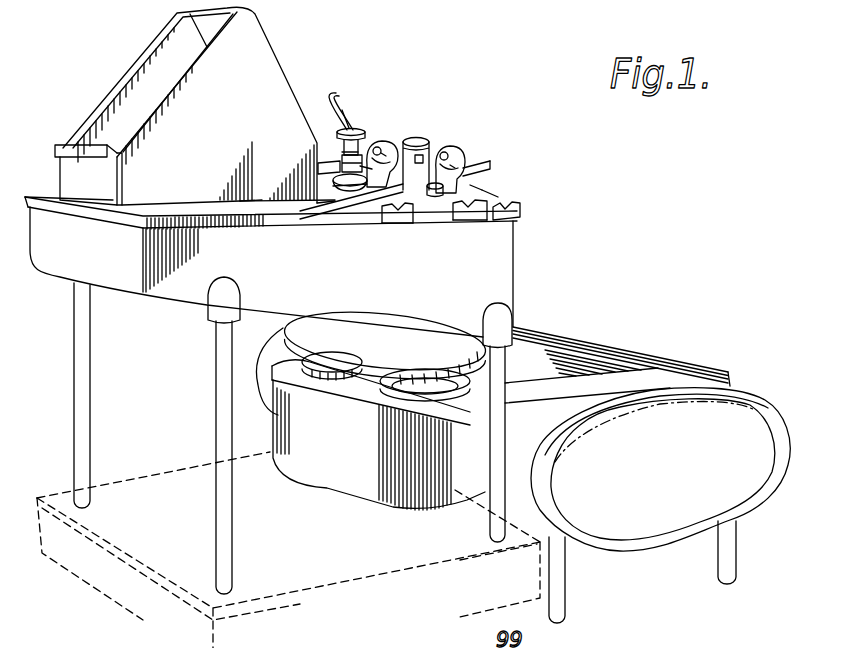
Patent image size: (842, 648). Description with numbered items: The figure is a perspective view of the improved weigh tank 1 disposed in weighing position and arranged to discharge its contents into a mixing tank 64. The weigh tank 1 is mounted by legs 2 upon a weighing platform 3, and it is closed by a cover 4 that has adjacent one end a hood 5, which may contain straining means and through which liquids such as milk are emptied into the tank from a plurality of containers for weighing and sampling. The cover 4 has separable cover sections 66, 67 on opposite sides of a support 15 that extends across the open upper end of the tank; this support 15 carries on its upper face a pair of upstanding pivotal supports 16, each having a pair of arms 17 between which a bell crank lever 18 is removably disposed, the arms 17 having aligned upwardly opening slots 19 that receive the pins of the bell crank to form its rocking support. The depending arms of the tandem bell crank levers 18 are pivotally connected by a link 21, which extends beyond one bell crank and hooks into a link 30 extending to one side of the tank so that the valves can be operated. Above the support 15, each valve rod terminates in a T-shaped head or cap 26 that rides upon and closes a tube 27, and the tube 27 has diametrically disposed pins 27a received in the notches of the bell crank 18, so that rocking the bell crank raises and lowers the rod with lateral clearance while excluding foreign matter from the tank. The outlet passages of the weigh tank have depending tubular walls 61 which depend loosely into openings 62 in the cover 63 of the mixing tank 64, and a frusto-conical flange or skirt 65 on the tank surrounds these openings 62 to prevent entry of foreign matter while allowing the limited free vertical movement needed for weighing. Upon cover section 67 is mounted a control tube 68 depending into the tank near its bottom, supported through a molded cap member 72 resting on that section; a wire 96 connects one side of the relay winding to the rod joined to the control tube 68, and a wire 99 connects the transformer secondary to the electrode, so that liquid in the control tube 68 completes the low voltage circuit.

The weigh tank 1 is at (500, 278).
The legs 2 is at (85, 420).
The weighing platform 3 is at (360, 582).
The cover 4 is at (273, 207).
The hood 5 is at (195, 106).
The support 15 is at (492, 197).
The pivotal supports 16 is at (352, 166).
The arms 17 is at (375, 140).
The bell crank lever 18 is at (371, 147).
The slots 19 is at (441, 152).
The link 21 is at (420, 213).
The T-shaped head or cap 26 is at (413, 138).
The tube 27 is at (332, 145).
The pins 27a is at (387, 200).
The link 30 is at (338, 152).
The depending tubular walls 61 is at (413, 385).
The openings 62 is at (317, 372).
The cover 63 is at (617, 365).
The mixing tank 64 is at (660, 469).
The frusto-conical flange or skirt 65 is at (392, 349).
The cover section 66 is at (507, 207).
The cover section 67 is at (417, 223).
The control tube 68 is at (360, 201).
The molded cap member or support 72 is at (333, 176).
The wire 96 is at (331, 100).
The wire 99 is at (340, 128).